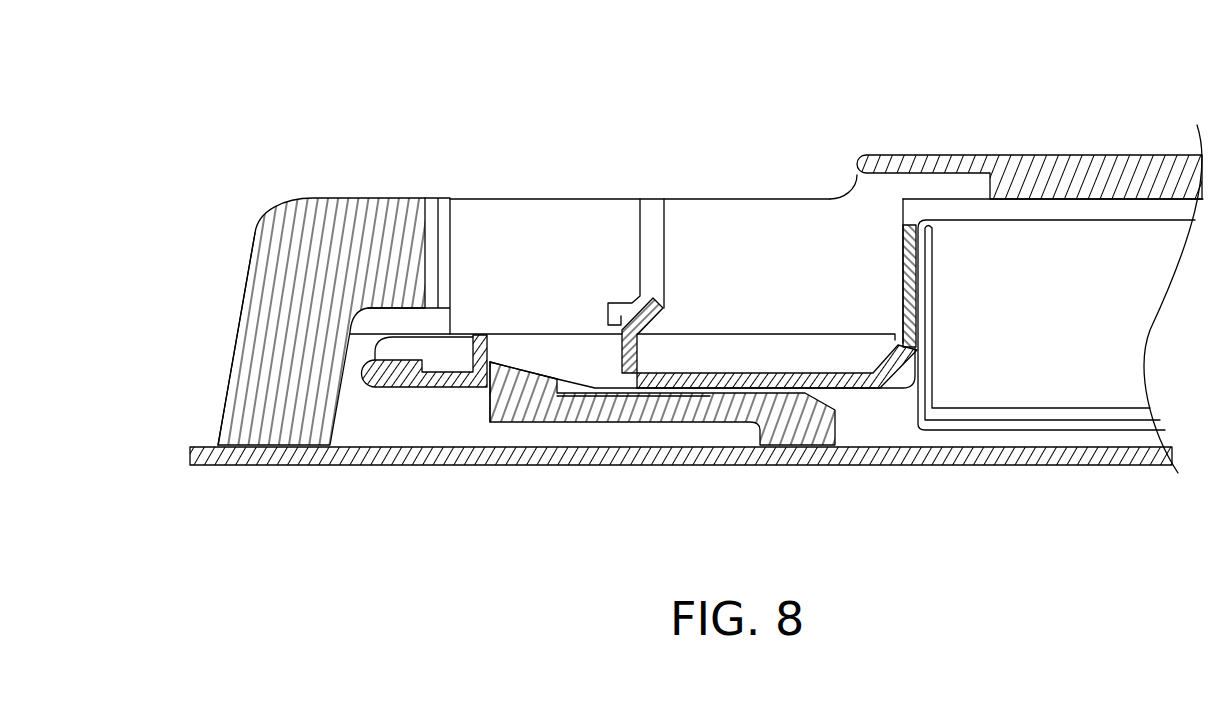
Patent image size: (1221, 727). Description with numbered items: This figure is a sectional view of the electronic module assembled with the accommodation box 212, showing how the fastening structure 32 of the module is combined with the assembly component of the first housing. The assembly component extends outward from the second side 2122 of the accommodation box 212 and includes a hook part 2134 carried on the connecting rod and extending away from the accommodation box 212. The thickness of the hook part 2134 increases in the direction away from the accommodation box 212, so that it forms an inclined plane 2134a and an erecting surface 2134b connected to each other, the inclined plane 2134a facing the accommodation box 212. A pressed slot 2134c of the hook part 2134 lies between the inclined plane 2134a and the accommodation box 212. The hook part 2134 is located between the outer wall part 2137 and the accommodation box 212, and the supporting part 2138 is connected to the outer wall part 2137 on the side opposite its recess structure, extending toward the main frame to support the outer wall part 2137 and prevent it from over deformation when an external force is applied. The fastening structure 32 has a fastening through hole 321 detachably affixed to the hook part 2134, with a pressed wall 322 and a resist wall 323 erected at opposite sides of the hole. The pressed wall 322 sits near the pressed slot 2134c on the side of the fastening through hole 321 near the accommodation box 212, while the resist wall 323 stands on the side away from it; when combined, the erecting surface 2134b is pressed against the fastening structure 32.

The fastening structure 32 is at (745, 326).
The accommodation box 212 is at (1110, 152).
The second side 2122 is at (857, 172).
The hook part 2134 is at (602, 432).
The inclined plane 2134a is at (532, 378).
The erecting surface 2134b is at (488, 408).
The pressed slot 2134c is at (569, 388).
The outer wall part 2137 is at (392, 240).
The supporting part 2138 is at (267, 333).
The fastening through hole 321 is at (599, 364).
The pressed wall 322 is at (637, 352).
The resist wall 323 is at (487, 350).